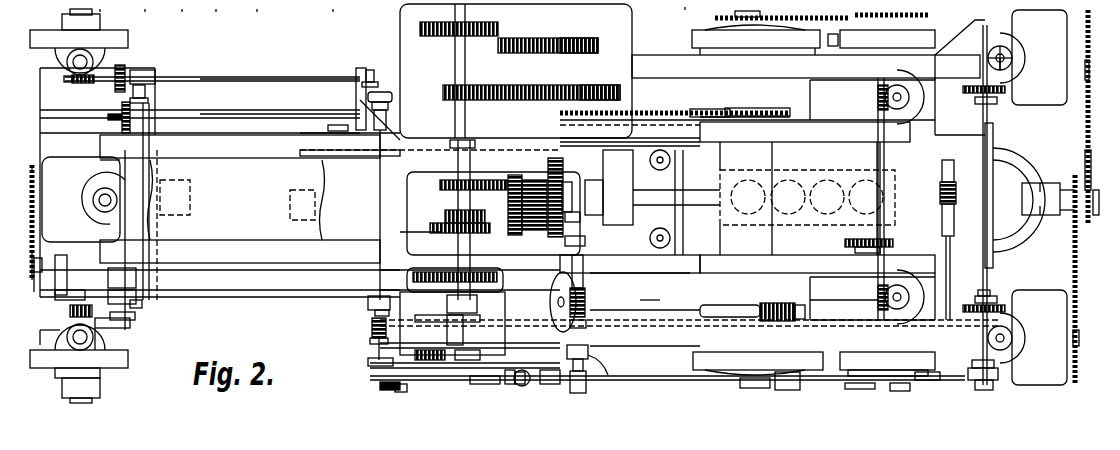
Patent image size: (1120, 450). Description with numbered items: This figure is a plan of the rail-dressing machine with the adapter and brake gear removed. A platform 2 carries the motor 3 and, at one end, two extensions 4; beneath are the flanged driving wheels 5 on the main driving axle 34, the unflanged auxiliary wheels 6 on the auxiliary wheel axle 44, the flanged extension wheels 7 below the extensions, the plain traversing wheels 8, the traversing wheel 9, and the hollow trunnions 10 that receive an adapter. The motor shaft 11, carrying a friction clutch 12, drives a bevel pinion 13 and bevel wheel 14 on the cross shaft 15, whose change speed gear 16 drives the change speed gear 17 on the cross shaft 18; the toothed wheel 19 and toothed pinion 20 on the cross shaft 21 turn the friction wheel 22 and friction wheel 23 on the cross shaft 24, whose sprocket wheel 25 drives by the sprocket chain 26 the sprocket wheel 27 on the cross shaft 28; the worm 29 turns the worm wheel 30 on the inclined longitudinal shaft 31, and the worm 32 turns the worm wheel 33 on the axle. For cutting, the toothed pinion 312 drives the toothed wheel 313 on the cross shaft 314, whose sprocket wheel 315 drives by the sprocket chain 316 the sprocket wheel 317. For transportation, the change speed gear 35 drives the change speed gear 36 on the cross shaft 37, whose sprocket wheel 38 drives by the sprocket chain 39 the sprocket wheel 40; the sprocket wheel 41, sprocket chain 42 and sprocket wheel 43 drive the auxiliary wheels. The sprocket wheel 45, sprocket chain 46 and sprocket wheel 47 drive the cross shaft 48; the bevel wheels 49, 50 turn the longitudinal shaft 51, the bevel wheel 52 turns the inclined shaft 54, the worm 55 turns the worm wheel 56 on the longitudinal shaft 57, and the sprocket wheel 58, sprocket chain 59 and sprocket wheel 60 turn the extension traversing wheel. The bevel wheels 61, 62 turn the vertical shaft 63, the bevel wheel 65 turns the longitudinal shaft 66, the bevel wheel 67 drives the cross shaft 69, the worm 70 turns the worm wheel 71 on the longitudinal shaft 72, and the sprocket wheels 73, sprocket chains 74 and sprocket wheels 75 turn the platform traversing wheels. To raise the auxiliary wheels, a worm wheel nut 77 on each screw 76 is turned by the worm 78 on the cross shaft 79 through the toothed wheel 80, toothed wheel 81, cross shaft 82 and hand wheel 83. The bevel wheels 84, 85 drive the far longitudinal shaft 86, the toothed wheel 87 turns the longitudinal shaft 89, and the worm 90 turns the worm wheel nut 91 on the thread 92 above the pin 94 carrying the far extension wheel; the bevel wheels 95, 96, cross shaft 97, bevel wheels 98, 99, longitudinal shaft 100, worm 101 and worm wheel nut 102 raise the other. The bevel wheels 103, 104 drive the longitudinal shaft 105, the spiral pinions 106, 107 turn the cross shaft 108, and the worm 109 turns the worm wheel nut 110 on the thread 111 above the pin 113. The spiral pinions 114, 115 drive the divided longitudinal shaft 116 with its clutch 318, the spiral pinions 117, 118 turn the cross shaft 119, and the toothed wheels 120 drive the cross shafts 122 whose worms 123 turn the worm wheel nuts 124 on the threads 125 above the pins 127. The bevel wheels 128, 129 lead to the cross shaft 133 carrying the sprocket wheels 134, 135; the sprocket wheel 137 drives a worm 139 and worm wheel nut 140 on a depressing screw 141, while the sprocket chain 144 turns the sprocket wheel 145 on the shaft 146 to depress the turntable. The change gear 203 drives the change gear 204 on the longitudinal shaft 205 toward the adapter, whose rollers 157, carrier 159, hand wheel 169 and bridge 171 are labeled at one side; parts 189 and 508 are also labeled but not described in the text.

The frame 2 is at (772, 187).
The spindles 3 is at (807, 197).
The frame bar 4 is at (240, 232).
The bracket 5 is at (757, 200).
The bracket 6 is at (887, 203).
The housing 7 is at (79, 188).
The housing 8 is at (1039, 197).
The housing 9 is at (81, 199).
The gear 10 is at (236, 200).
The gear shaft 11 is at (611, 205).
The box 12 is at (618, 187).
The shaft 13 is at (460, 195).
The gear 14 is at (460, 185).
The gear box 15 is at (460, 55).
The gear 16 is at (450, 215).
The gear 17 is at (440, 232).
The gear 18 is at (465, 246).
The gear housing 19 is at (450, 272).
The rod 20 is at (432, 276).
The rod 21 is at (443, 279).
The bracket 22 is at (400, 385).
The lever 23 is at (485, 385).
The gear 24 is at (440, 360).
The block 25 is at (470, 345).
The block 26 is at (550, 385).
The spring 27 is at (592, 380).
The worm 28 is at (610, 362).
The collar 29 is at (590, 340).
The shaft 30 is at (575, 395).
The rod 31 is at (676, 318).
The spring 32 is at (780, 303).
The collar 33 is at (800, 312).
The spindle carrier 34 is at (807, 198).
The gear 35 is at (425, 26).
The gear 36 is at (600, 44).
The gear 37 is at (548, 48).
The gear 38 is at (580, 92).
The rack 39 is at (700, 110).
The rod 40 is at (790, 125).
The chain 41 is at (715, 18).
The bracket 42 is at (834, 33).
The chain 43 is at (945, 18).
The bracket 44 is at (940, 55).
The block 45 is at (460, 360).
The bar 46 is at (425, 322).
The bar 47 is at (380, 362).
The bar 48 is at (380, 147).
The collar 49 is at (380, 312).
The bracket 50 is at (370, 305).
The rod 51 is at (242, 287).
The bracket 52 is at (68, 296).
The rod 54 is at (60, 276).
The block 55 is at (100, 296).
The block 56 is at (100, 277).
The sprocket 57 is at (36, 265).
The shaft 58 is at (34, 275).
The chain 59 is at (32, 250).
The chain 60 is at (32, 173).
The rod 61 is at (378, 344).
The worm 62 is at (372, 325).
The collar 63 is at (975, 296).
The collar 65 is at (372, 337).
The rod 66 is at (665, 348).
The bracket 67 is at (940, 380).
The shaft 69 is at (952, 240).
The worm 70 is at (954, 210).
The collar 71 is at (954, 173).
The bracket 72 is at (1016, 200).
The chain 73 is at (1088, 185).
The chain 74 is at (1088, 145).
The guide 75 is at (1090, 33).
The worm 76 is at (880, 90).
The worm wheel 77 is at (885, 107).
The shaft 78 is at (880, 92).
The shaft 79 is at (884, 152).
The collar 80 is at (880, 248).
The gear 81 is at (860, 240).
The rod 82 is at (878, 305).
The bracket 83 is at (860, 388).
The collar 84 is at (376, 72).
The bracket 85 is at (365, 88).
The shaft 86 is at (246, 77).
The gear 87 is at (125, 70).
The shaft 89 is at (98, 78).
The worm 90 is at (75, 83).
The frame 91 is at (70, 72).
The worm wheel 92 is at (68, 62).
The pedestal 94 is at (90, 398).
The bracket 95 is at (145, 72).
The collar 96 is at (145, 90).
The rod 97 is at (148, 107).
The block 98 is at (142, 302).
The block 99 is at (130, 318).
The lever 100 is at (125, 325).
The worm 101 is at (70, 314).
The bracket 102 is at (45, 337).
The shaft 103 is at (380, 130).
The collar 104 is at (378, 103).
The rod 105 is at (246, 118).
The rod 106 is at (40, 110).
The rod 107 is at (40, 118).
The bar 108 is at (120, 165).
The housing 109 is at (95, 225).
The gear 110 is at (100, 210).
The hub 111 is at (100, 190).
The chain 113 is at (32, 202).
The bar 114 is at (378, 378).
The block 115 is at (385, 385).
The rod 116 is at (420, 382).
The bracket 117 is at (990, 385).
The bracket 118 is at (980, 385).
The worm wheel 119 is at (988, 173).
The shaft 120 is at (983, 93).
The arm 122 is at (995, 75).
The arm 123 is at (1005, 65).
The arm 124 is at (1010, 70).
The arm 125 is at (1000, 58).
The bracket 127 is at (1090, 65).
The block 128 is at (518, 385).
The rod 129 is at (525, 385).
The disc 133 is at (550, 302).
The collar 134 is at (575, 240).
The collar 135 is at (570, 215).
The block 137 is at (498, 382).
The rod 139 is at (525, 117).
The rack 140 is at (680, 150).
The shaft 141 is at (690, 160).
The rod 144 is at (648, 300).
The rod 145 is at (680, 273).
The rod 146 is at (745, 142).
The lever 157 is at (187, 6).
The lever 159 is at (221, 6).
The lever 169 is at (150, 6).
The lever 171 is at (105, 6).
The lever 189 is at (338, 6).
The gear 203 is at (527, 207).
The gear 204 is at (605, 150).
The shaft 205 is at (420, 200).
The gear 312 is at (445, 183).
The rod 313 is at (330, 140).
The collar 314 is at (330, 127).
The rod 315 is at (380, 110).
The rod 316 is at (600, 138).
The chain 317 is at (615, 135).
The bracket 318 is at (787, 387).
The lever 508 is at (690, 5).